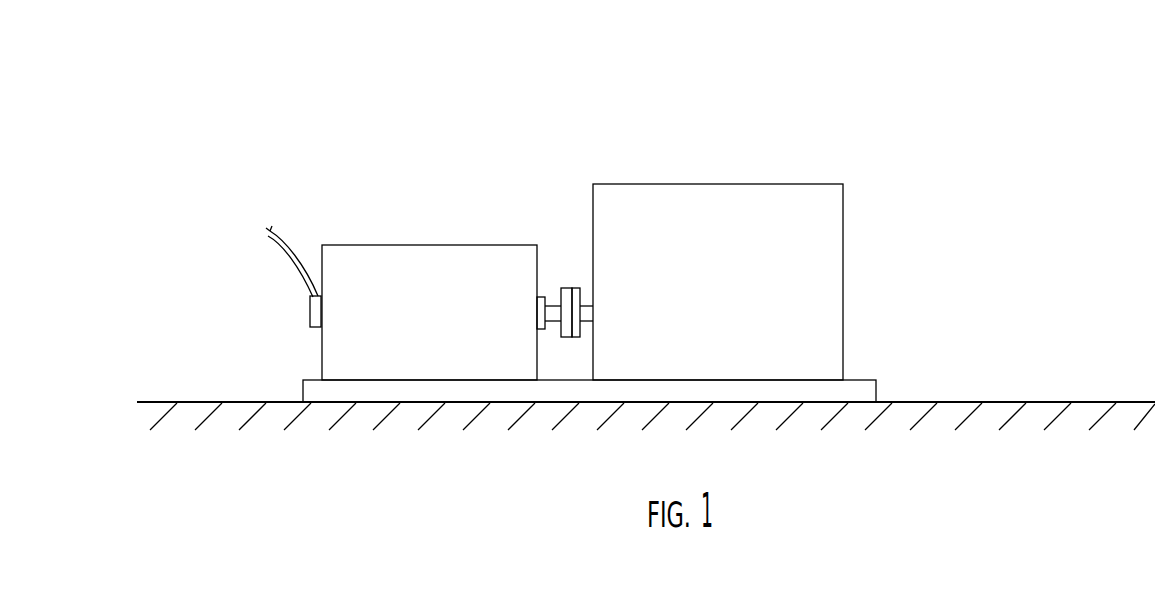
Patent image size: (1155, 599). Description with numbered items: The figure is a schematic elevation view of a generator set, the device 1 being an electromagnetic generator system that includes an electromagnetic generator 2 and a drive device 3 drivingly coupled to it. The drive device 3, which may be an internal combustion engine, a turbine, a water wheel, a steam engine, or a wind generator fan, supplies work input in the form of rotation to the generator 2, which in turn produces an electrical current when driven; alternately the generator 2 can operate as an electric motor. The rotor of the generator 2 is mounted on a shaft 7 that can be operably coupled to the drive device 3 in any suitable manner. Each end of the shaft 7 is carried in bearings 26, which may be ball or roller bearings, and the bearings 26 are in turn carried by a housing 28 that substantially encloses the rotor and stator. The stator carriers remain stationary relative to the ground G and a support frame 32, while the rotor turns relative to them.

The device 1 is at (639, 85).
The electromagnetic generator 2 is at (426, 245).
The drive device 3 is at (712, 185).
The shaft 7 is at (552, 303).
The bearings 26 is at (310, 327).
The housing 28 is at (368, 245).
The support frame 32 is at (876, 380).
The ground G is at (1018, 402).